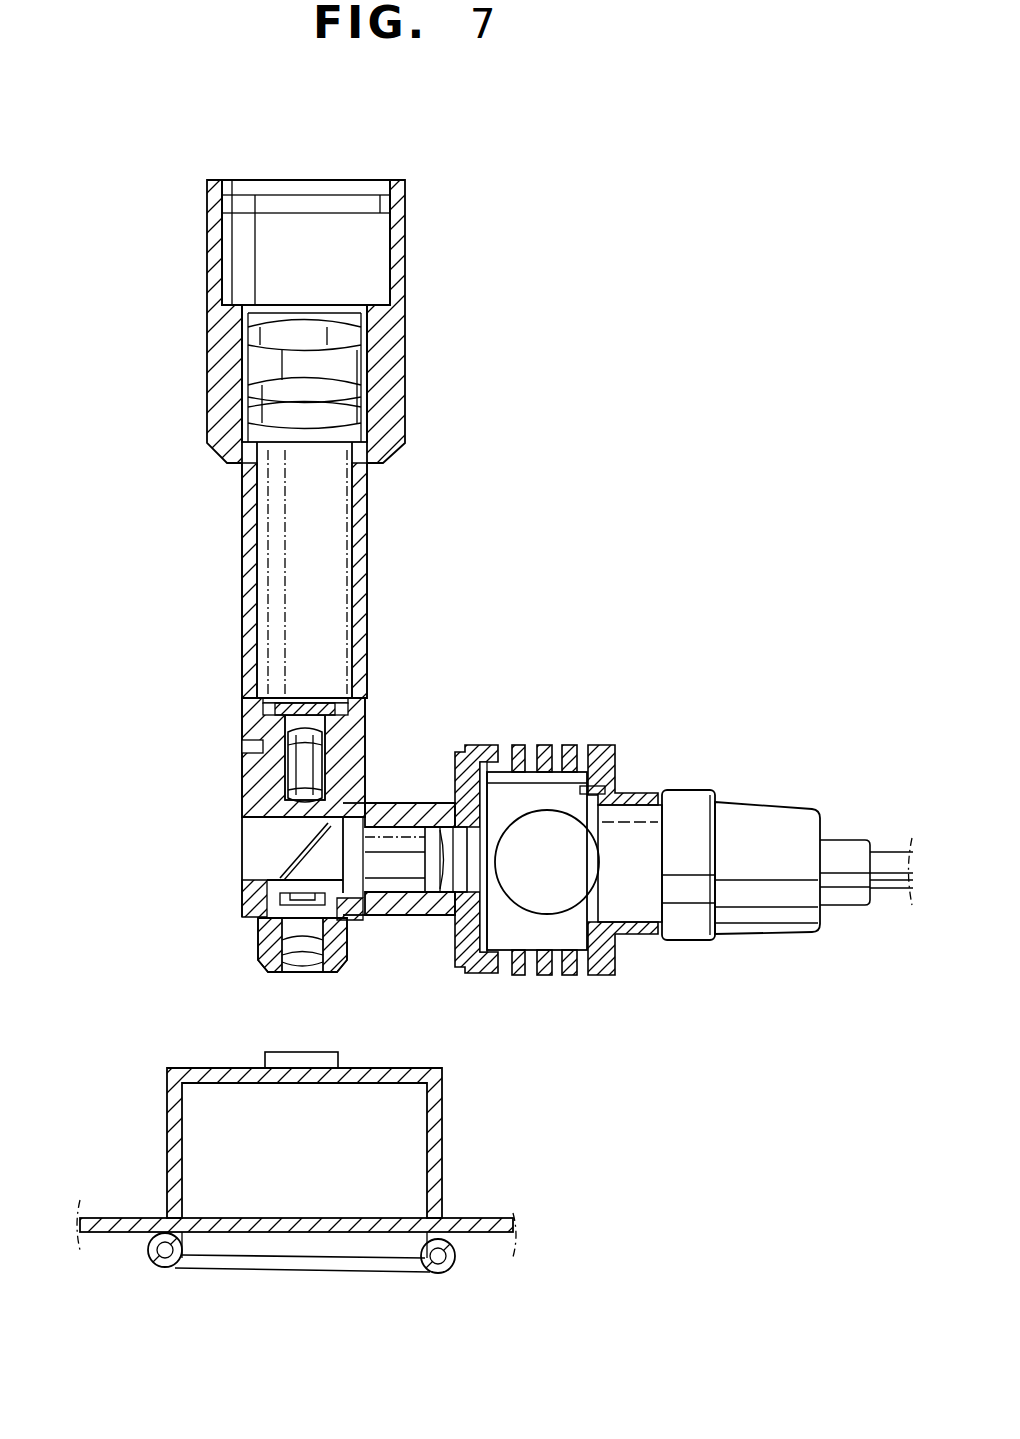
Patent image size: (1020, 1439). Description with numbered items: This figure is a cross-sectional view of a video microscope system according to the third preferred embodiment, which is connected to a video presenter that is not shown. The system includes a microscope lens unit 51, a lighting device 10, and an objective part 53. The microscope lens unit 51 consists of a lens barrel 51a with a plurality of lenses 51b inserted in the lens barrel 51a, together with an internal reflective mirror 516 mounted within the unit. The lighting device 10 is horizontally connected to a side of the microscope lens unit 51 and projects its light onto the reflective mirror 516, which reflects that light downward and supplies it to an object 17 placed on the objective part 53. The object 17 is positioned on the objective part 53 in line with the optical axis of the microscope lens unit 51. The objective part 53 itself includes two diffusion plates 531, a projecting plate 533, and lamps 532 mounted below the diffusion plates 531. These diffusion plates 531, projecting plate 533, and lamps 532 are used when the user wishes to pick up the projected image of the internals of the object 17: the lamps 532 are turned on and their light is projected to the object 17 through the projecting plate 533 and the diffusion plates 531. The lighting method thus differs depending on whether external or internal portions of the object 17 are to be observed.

The microscope lens unit 51 is at (376, 549).
The lens barrel 51a is at (340, 650).
The lenses 51b is at (293, 767).
The internal reflective mirror 516 is at (297, 850).
The lighting device 10 is at (751, 941).
The objective part 53 is at (162, 1117).
The object 17 is at (302, 1050).
The diffusion plates 531 is at (380, 1072).
The lamps 532 is at (170, 1257).
The projecting plate 533 is at (298, 1252).